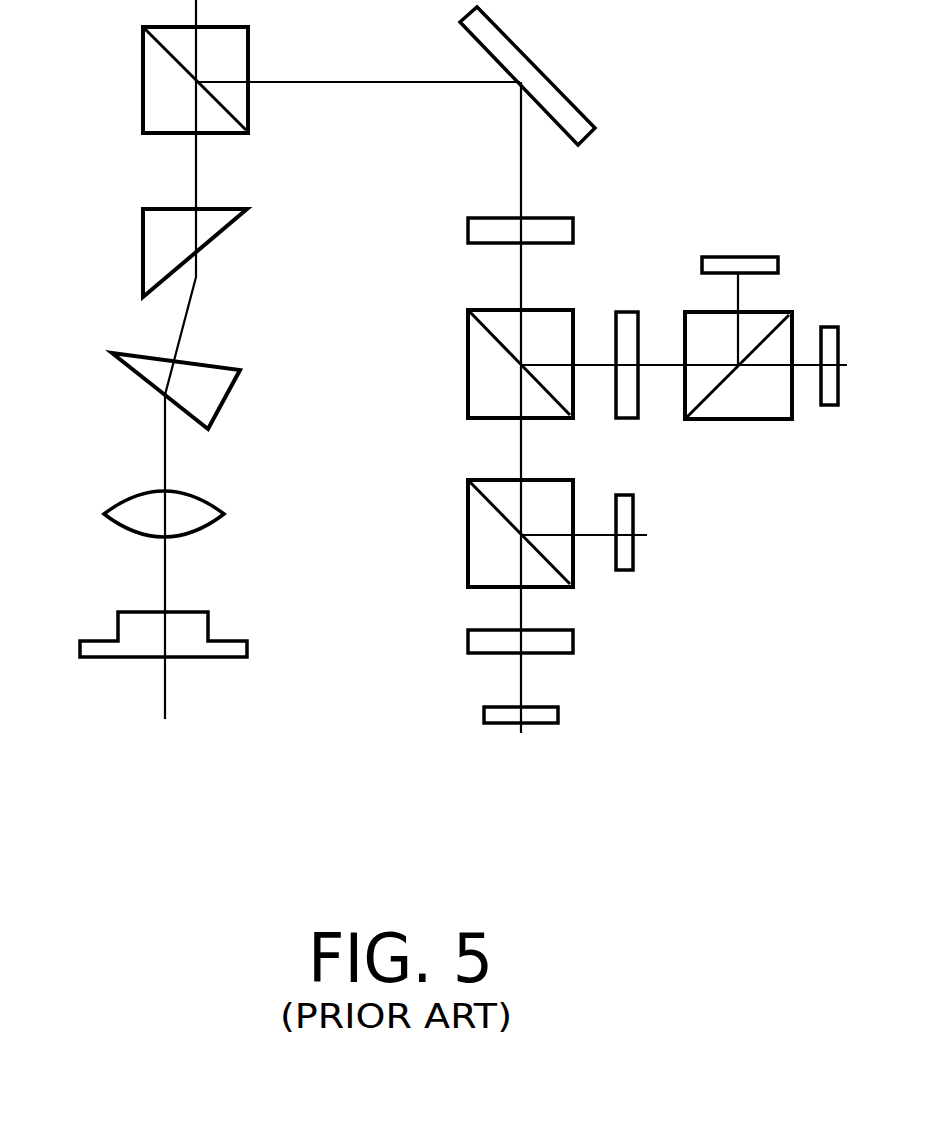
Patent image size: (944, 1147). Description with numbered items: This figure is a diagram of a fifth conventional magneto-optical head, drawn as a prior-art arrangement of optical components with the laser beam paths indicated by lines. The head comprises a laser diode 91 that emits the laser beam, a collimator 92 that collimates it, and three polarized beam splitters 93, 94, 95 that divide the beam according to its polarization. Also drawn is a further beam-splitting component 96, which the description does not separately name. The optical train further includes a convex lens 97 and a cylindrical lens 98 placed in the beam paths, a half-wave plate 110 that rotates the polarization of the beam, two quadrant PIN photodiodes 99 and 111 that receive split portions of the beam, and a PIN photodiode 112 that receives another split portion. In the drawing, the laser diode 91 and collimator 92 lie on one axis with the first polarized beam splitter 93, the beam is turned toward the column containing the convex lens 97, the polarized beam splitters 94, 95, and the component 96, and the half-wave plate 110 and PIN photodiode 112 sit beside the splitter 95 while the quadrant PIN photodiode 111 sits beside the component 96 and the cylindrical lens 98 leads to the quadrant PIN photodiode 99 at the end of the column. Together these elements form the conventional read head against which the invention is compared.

The laser diode 91 is at (132, 660).
The collimator 92 is at (128, 495).
The polarized beam splitter 93 is at (143, 55).
The polarized beam splitter 94 is at (468, 348).
The polarized beam splitter 95 is at (770, 422).
The beam splitter 96 is at (468, 512).
The convex lens 97 is at (468, 228).
The cylindrical lens 98 is at (573, 642).
The quadrant PIN photodiode 99 is at (558, 715).
The half-wave plate 110 is at (637, 312).
The quadrant PIN photodiode 111 is at (632, 553).
The PIN photodiode 112 is at (777, 272).